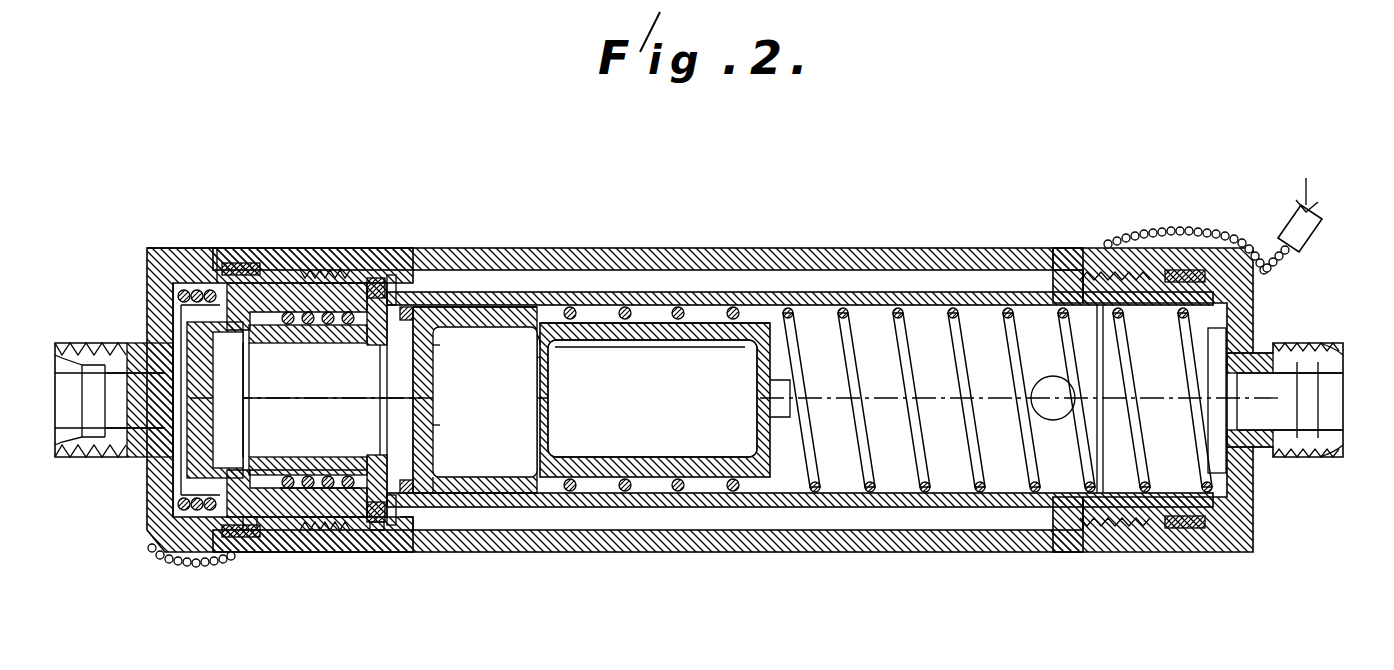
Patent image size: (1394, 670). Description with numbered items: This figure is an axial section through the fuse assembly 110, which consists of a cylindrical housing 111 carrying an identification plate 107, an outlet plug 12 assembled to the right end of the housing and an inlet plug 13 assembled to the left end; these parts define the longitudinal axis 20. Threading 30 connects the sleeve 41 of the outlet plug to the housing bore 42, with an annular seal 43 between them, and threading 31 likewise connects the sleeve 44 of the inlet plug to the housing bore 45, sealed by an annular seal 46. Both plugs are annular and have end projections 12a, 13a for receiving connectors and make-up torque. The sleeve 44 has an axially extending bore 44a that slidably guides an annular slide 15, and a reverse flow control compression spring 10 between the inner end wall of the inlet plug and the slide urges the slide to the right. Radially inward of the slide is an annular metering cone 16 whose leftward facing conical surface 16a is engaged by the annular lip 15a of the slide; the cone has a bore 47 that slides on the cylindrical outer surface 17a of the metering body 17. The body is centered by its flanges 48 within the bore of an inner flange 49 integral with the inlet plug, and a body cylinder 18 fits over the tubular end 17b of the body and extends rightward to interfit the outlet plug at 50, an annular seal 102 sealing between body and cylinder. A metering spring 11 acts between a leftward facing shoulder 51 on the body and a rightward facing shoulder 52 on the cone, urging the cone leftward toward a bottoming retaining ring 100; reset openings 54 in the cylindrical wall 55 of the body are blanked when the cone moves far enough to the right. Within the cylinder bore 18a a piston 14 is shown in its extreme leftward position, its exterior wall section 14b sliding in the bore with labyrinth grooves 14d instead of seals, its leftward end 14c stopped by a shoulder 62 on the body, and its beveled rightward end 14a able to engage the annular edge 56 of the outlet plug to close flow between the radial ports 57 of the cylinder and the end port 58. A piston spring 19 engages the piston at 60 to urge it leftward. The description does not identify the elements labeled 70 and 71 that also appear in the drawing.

The fuse assembly 110 is at (928, 188).
The reverse flow control compression spring 10 is at (177, 250).
The annular seal 46 is at (235, 263).
The annular slide 15 is at (262, 300).
The axially extending bore 44a is at (297, 283).
The metering spring 11 is at (345, 283).
The inner flange 49 is at (391, 275).
The body flanges 48 is at (385, 290).
The tubular end 17b is at (440, 330).
The body cylinder 18 is at (672, 292).
The piston 14 is at (705, 330).
The beveled rightward end 14a is at (745, 340).
The housing bore 42 is at (1040, 270).
The interfit 50 is at (1090, 298).
The end projection 12a is at (1318, 343).
The bottoming retaining ring 100 is at (190, 348).
The metering body 17 is at (185, 340).
The end projection 13a is at (70, 343).
The axially extending bore 47 is at (215, 440).
The inlet plug 13 is at (130, 505).
The cup 70 is at (227, 380).
The cylindrical outer surface 17a is at (265, 335).
The chamber 71 is at (333, 400).
The annular edge or lip 15a is at (283, 470).
The cylindrical wall 55 is at (300, 465).
The leftward facing shoulder 51 is at (428, 357).
The through openings 54 is at (428, 420).
The shoulder 62 is at (437, 470).
The labyrinth grooves 14d is at (538, 345).
The piston engagement 60 is at (575, 475).
The longitudinal axis 20 is at (655, 396).
The through ports 57 is at (1040, 320).
The annular edge 56 is at (1200, 328).
The end port 58 is at (1282, 400).
The outlet plug 12 is at (1270, 500).
The annular seal 43 is at (1195, 530).
The sleeve 41 is at (1125, 522).
The threading 30 is at (1100, 552).
The cylinder bore 18a is at (832, 507).
The piston spring 19 is at (942, 552).
The cylindrical housing 111 is at (748, 552).
The identification plate 107 is at (668, 553).
The piston exterior wall section 14b is at (535, 507).
The leftward end 14c is at (468, 507).
The annular seal 102 is at (410, 530).
The housing bore 45 is at (375, 530).
The sleeve 44 is at (290, 518).
The rightward facing shoulder 52 is at (263, 530).
The threading 31 is at (313, 525).
The annular metering cone 16 is at (245, 537).
The conical surface 16a is at (195, 510).